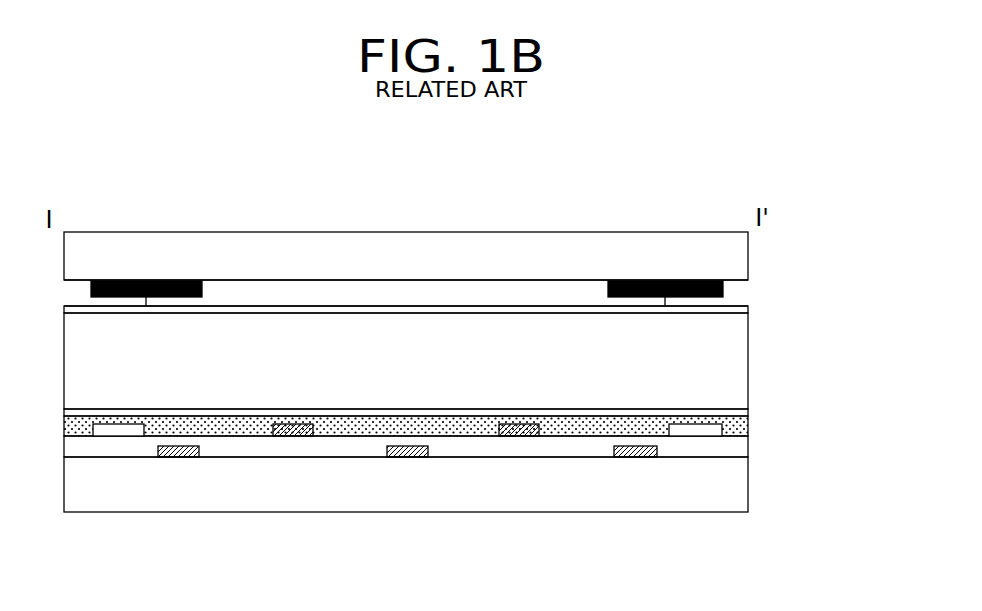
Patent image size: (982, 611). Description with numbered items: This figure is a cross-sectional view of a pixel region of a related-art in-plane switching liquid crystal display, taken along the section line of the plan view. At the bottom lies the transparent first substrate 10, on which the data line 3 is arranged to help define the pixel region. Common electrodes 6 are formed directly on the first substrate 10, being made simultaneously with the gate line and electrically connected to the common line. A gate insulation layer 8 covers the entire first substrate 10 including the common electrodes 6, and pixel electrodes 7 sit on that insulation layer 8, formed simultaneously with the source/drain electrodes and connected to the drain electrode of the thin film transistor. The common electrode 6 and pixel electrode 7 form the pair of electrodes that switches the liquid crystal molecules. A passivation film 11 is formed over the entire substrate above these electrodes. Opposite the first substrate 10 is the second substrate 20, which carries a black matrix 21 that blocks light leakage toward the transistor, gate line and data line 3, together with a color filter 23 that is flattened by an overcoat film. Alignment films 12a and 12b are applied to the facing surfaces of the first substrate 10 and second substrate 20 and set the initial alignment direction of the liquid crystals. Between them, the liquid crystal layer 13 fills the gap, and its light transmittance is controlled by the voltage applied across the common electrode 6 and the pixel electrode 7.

The second substrate 20 is at (734, 255).
The black matrix 21 is at (629, 280).
The color filter 23 is at (468, 292).
The alignment film 12b is at (735, 310).
The liquid crystal layer 13 is at (735, 363).
The alignment film 12a is at (735, 408).
The passivation film 11 is at (738, 427).
The gate insulation layer 8 is at (738, 447).
The first substrate 10 is at (738, 488).
The data line 3 is at (112, 436).
The pixel electrode 7 is at (288, 436).
The common electrode 6 is at (172, 457).